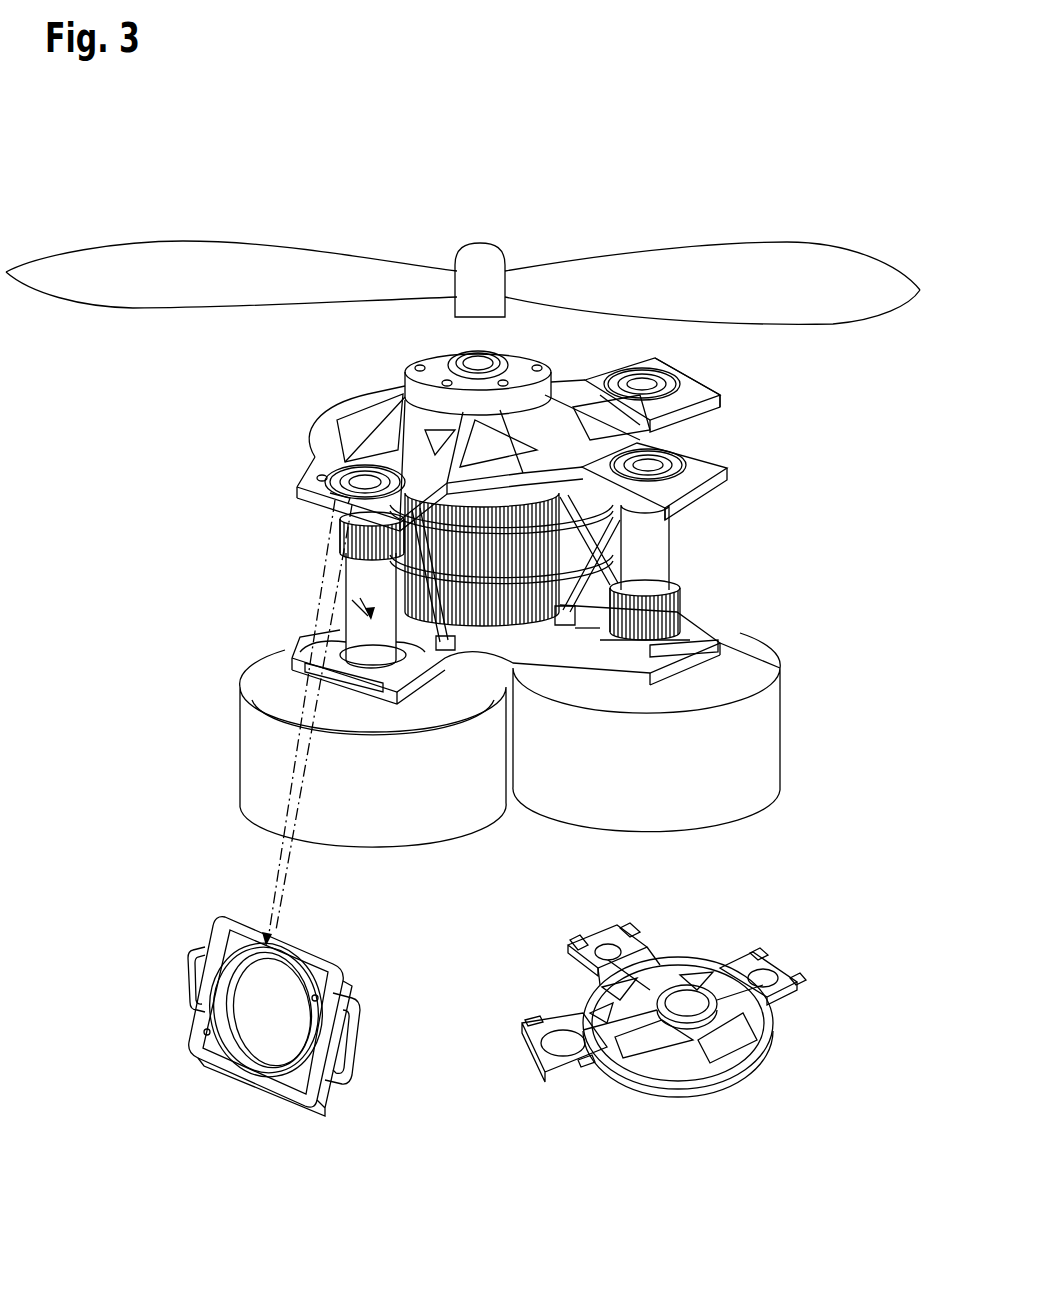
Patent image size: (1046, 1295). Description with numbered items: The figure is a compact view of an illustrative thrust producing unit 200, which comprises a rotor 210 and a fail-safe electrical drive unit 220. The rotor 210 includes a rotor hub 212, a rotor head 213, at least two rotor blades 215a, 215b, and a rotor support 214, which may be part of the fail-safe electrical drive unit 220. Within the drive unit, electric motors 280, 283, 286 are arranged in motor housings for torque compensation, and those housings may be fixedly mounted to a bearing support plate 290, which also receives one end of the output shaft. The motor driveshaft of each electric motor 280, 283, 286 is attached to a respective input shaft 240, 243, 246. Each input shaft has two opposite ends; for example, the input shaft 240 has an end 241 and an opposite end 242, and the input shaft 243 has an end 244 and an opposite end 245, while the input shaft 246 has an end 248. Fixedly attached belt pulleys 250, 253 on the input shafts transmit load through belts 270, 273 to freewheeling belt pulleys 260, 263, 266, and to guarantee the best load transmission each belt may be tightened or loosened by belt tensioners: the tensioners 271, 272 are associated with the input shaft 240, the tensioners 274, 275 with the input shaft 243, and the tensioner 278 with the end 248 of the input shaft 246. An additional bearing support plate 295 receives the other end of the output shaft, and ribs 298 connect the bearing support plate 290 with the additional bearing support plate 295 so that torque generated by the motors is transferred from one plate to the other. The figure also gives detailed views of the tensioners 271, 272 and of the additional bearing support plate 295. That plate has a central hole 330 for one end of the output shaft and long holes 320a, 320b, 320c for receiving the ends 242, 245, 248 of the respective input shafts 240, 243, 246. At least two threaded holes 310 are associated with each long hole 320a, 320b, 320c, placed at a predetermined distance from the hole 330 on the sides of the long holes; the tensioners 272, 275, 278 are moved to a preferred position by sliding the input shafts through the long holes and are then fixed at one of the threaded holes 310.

The thrust producing unit 200 is at (546, 129).
The rotor 210 is at (553, 243).
The rotor hub 212 is at (560, 362).
The rotor head 213 is at (482, 270).
The rotor support 214 is at (572, 369).
The rotor blade 215a is at (812, 260).
The rotor blade 215b is at (203, 265).
The fail-safe electrical drive unit 220 is at (848, 883).
The input shaft 240 is at (365, 590).
The end 241 is at (300, 652).
The end 242 is at (357, 457).
The input shaft 243 is at (650, 527).
The end 244 is at (683, 624).
The end 245 is at (660, 447).
The input shaft 246 is at (653, 437).
The end 248 is at (656, 374).
The fixedly attached belt pulley 250 is at (343, 520).
The fixedly attached belt pulley 253 is at (655, 608).
The freewheeling belt pulley 260 is at (500, 650).
The freewheeling belt pulley 263 is at (512, 645).
The freewheeling belt pulley 266 is at (463, 650).
The belt 270 is at (340, 497).
The tensioner 271 is at (345, 677).
The tensioner 272 is at (320, 477).
The belt 273 is at (583, 640).
The tensioner 274 is at (700, 650).
The tensioner 275 is at (690, 489).
The tensioner 278 is at (688, 390).
The electric motor 280 is at (267, 760).
The electric motor 283 is at (733, 767).
The electric motor 286 is at (747, 625).
The bearing support plate 290 is at (330, 632).
The additional bearing support plate 295 is at (378, 420).
The ribs 298 is at (363, 583).
The threaded holes 310 is at (637, 943).
The long hole 320a is at (773, 970).
The long hole 320b is at (570, 940).
The long hole 320c is at (543, 1047).
The hole 330 is at (700, 1008).